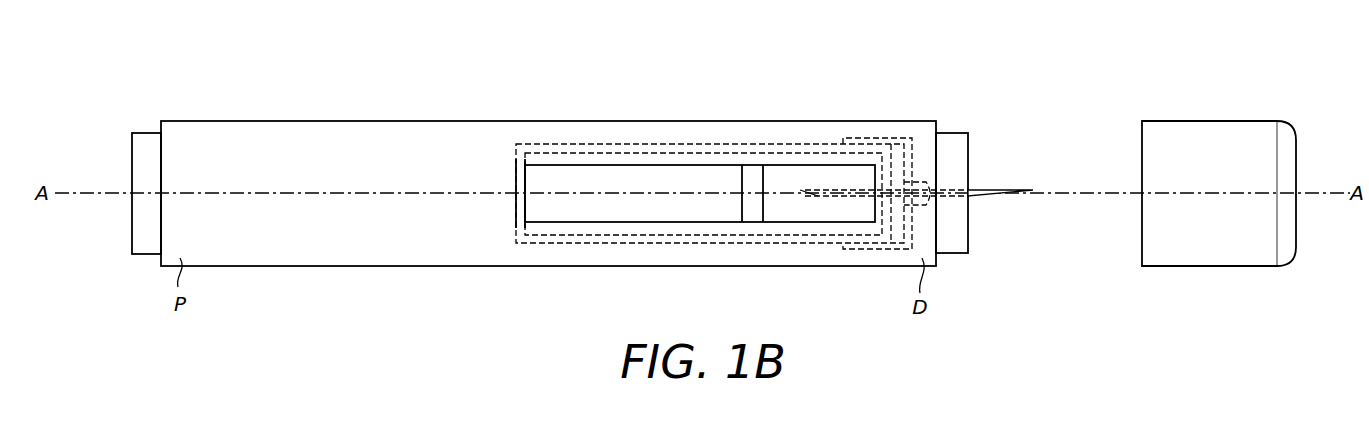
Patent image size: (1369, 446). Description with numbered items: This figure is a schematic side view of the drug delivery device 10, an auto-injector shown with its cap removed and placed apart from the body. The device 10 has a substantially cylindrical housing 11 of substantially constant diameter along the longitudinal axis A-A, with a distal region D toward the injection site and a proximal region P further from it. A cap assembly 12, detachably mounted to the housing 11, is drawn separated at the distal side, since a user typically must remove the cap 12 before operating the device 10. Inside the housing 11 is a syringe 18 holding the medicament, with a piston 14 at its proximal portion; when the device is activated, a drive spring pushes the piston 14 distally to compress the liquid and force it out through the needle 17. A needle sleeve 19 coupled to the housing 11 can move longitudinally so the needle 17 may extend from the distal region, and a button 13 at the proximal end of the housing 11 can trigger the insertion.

The drug delivery device 10 is at (899, 74).
The housing 11 is at (746, 130).
The cap assembly 12 is at (1213, 130).
The button 13 is at (145, 245).
The piston 14 is at (754, 213).
The needle 17 is at (1008, 190).
The syringe 18 is at (562, 243).
The needle sleeve 19 is at (958, 142).